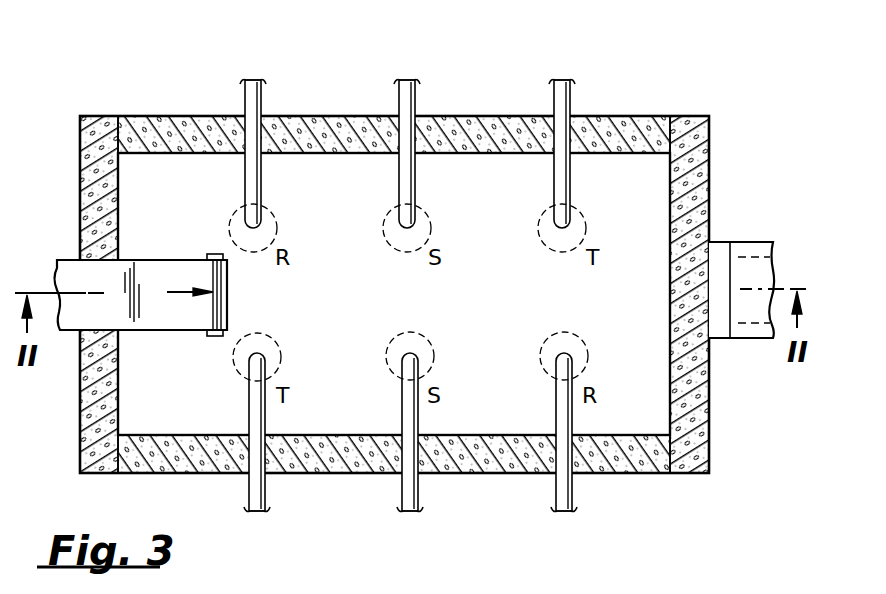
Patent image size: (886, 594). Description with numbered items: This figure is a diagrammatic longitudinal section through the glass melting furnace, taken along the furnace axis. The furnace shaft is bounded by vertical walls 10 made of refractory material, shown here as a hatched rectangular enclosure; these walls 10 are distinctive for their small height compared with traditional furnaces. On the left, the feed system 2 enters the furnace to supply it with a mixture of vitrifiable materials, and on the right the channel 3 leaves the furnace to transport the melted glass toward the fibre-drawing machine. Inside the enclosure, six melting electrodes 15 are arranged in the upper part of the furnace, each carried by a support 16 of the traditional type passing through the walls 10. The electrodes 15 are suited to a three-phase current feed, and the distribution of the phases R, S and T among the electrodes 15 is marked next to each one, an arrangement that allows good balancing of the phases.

The feed system 2 is at (64, 248).
The channel 3 is at (749, 250).
The vertical walls 10 is at (80, 158).
The melting electrodes 15 is at (270, 211).
The supports 16 is at (245, 180).